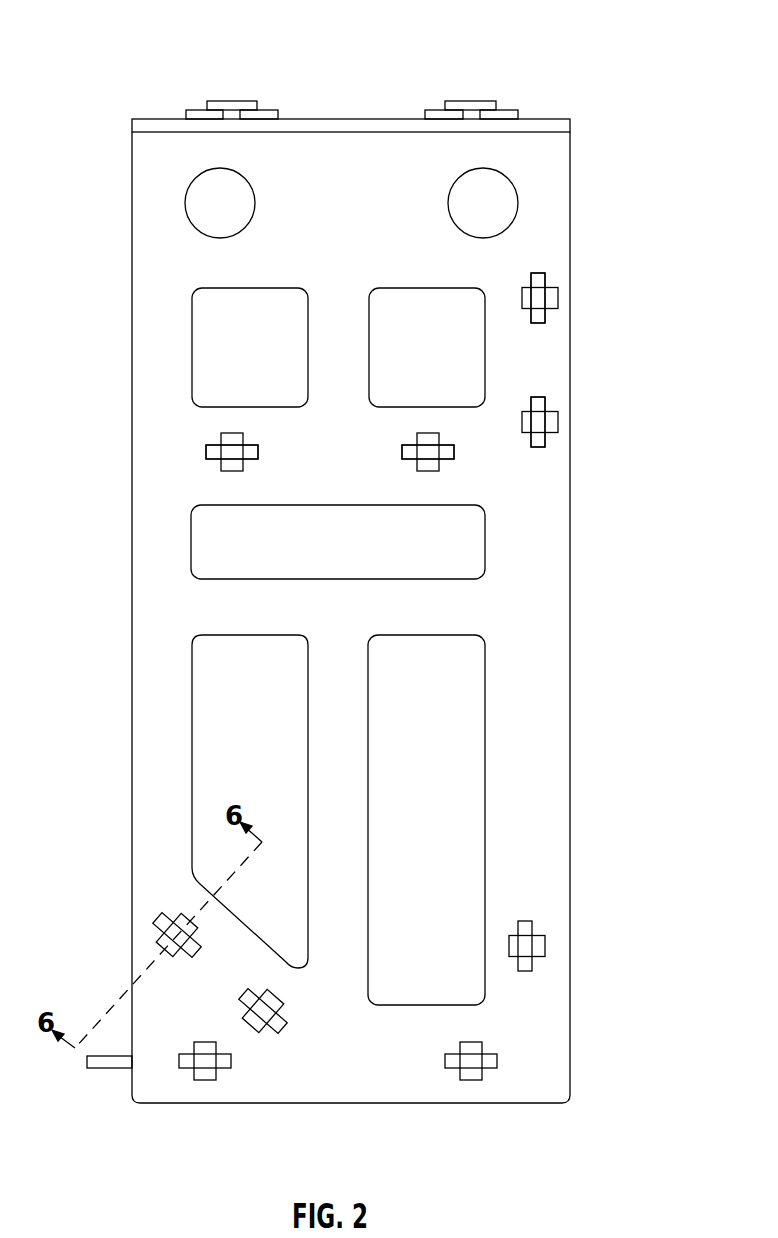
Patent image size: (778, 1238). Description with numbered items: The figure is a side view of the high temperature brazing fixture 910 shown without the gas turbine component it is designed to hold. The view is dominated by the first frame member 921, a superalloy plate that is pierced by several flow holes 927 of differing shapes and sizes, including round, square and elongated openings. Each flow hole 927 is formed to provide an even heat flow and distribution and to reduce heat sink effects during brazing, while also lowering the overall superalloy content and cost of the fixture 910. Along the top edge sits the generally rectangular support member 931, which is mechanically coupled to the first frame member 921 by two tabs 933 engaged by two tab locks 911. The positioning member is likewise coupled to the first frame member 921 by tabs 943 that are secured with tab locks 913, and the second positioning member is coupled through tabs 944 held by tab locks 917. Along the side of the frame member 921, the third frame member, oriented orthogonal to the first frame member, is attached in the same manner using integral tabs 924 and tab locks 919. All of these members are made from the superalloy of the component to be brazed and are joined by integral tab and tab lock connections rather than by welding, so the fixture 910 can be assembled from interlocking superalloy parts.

The high temperature brazing fixture 910 is at (553, 42).
The tab lock 911 is at (264, 111).
The tab lock 913 is at (164, 948).
The tab lock 917 is at (222, 438).
The tab lock 919 is at (559, 298).
The first frame member 921 is at (570, 542).
The tab 924 is at (546, 276).
The flow hole 927 is at (507, 203).
The support member 931 is at (570, 125).
The tab 933 is at (224, 101).
The tab 943 is at (157, 920).
The tab 944 is at (249, 445).